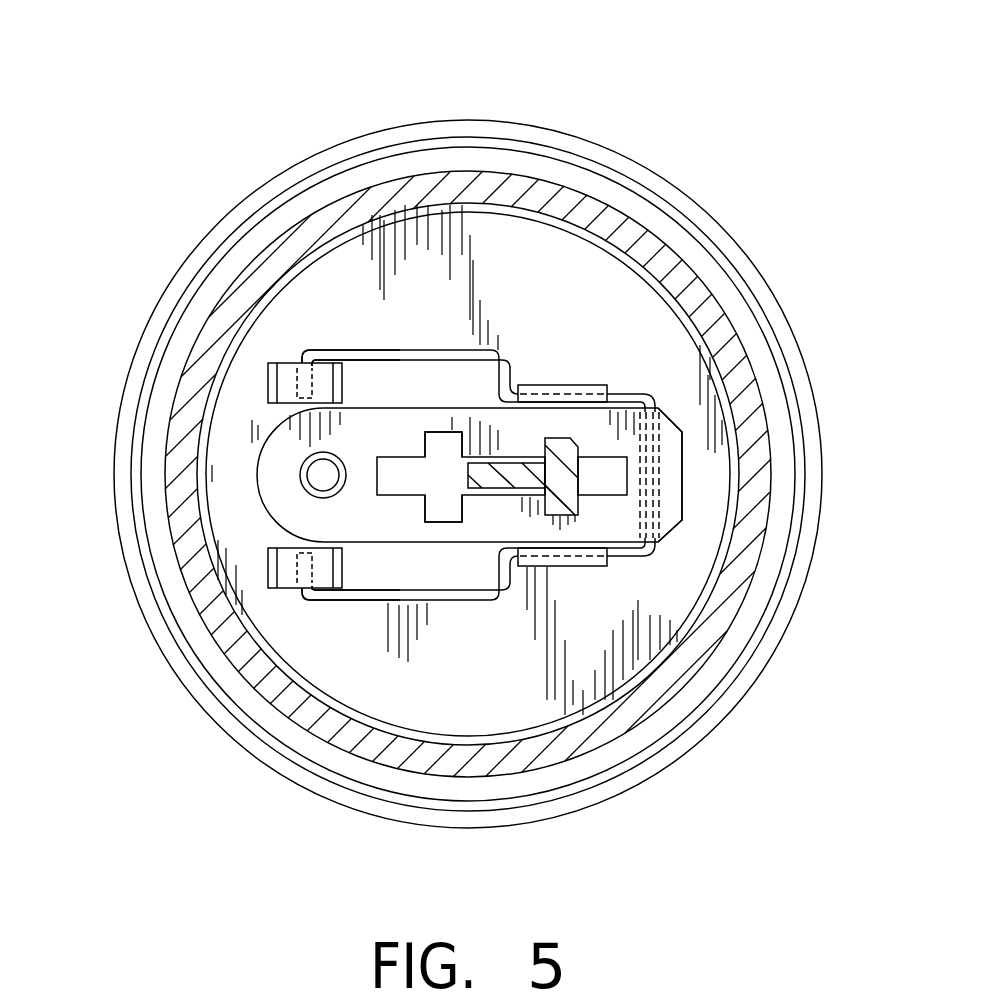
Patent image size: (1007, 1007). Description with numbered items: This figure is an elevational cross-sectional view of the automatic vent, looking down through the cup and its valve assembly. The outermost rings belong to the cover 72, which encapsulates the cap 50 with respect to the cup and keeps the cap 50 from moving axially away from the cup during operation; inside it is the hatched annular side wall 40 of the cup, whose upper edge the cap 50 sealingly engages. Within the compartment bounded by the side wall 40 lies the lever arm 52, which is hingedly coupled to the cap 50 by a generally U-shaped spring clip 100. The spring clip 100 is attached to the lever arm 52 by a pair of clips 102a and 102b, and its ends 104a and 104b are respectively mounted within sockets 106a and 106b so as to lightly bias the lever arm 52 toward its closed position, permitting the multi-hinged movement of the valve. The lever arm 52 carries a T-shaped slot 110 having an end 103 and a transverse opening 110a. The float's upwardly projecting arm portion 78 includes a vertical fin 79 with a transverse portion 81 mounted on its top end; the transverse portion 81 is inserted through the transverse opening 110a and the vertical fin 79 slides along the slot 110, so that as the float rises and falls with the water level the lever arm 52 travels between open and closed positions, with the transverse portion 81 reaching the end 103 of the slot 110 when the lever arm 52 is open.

The annular side wall 40 is at (640, 230).
The cover 72 is at (730, 248).
The transverse portion 81 is at (563, 442).
The cap 50 is at (673, 363).
The lever arm 52 is at (667, 443).
The end 103 is at (613, 482).
The arm portion 78 is at (600, 513).
The vertical fin 79 is at (485, 483).
The spring clip 100 is at (372, 350).
The T-shaped slot 110 is at (402, 470).
The transverse opening 110a is at (442, 440).
The clip 102a is at (560, 387).
The clip 102b is at (565, 568).
The end of spring clip 104a is at (303, 358).
The end of spring clip 104b is at (303, 595).
The socket 106a is at (272, 381).
The socket 106b is at (273, 568).